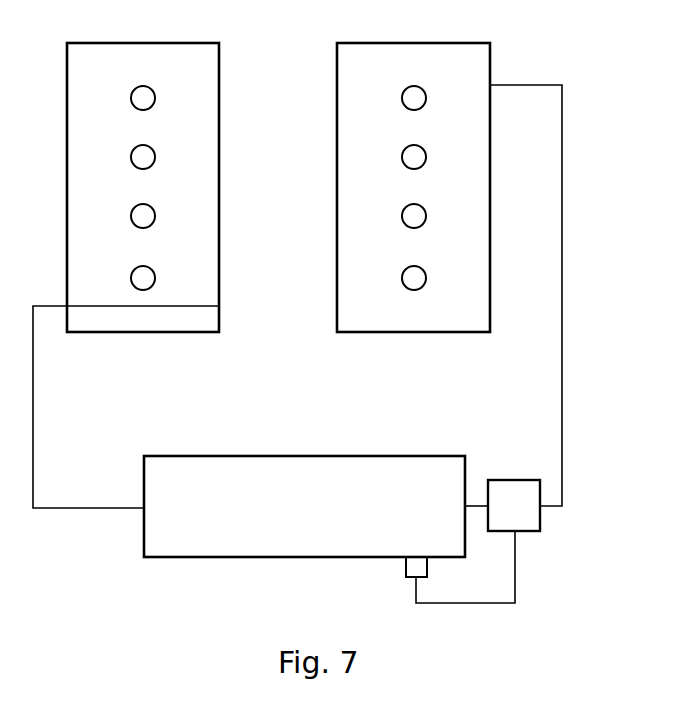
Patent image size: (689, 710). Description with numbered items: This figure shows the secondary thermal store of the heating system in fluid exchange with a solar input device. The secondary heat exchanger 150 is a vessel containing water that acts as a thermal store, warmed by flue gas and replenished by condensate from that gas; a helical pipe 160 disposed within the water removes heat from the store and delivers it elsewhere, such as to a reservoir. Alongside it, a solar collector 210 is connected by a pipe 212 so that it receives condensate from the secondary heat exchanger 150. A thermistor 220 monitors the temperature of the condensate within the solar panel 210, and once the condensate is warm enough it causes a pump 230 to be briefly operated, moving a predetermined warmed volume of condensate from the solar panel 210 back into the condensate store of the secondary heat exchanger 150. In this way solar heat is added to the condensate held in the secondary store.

The helical pipe 160 is at (143, 97).
The secondary heat exchanger 150 is at (436, 43).
The solar collector 210 is at (195, 558).
The pipe 212 is at (62, 509).
The thermistor 220 is at (405, 566).
The pump 230 is at (540, 518).